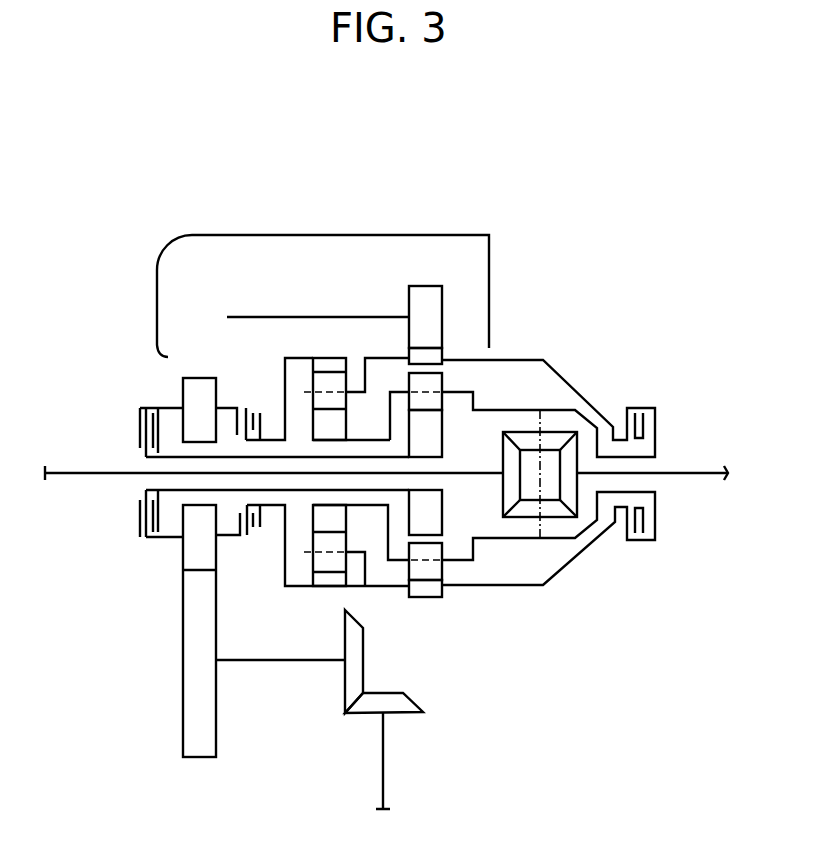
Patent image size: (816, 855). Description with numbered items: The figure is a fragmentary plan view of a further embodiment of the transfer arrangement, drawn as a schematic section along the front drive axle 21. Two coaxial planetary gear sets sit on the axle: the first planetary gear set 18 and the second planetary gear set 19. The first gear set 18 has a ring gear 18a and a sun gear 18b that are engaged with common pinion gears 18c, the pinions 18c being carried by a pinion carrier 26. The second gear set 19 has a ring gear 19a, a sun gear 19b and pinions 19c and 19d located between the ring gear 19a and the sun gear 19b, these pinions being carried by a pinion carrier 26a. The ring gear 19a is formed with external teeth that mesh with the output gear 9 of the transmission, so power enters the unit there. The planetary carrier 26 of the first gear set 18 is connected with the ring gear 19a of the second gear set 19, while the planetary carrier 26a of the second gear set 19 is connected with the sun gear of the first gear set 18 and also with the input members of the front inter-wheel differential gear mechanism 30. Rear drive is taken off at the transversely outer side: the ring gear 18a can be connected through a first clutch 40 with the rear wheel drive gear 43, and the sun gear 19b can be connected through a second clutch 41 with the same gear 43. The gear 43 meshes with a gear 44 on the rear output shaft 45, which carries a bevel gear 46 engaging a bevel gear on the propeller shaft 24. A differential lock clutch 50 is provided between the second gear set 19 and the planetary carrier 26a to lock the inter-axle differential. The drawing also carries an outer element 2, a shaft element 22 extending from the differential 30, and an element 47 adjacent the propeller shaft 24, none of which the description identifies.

The housing 2 is at (415, 235).
The output gear 9 is at (433, 287).
The first planetary gear set 18 is at (327, 597).
The ring gear 18a is at (325, 363).
The sun gear 18b is at (320, 519).
The pinion gears 18c is at (347, 399).
The second planetary gear set 19 is at (427, 600).
The ring gear 19a is at (441, 358).
The sun gear 19b is at (437, 517).
The pinion 19c is at (441, 560).
The pinion 19d is at (441, 386).
The front drive axle 21 is at (104, 477).
The output shaft 22 is at (689, 473).
The propeller shaft 24 is at (384, 775).
The pinion carrier 26 is at (392, 358).
The pinion carrier 26a is at (505, 410).
The front inter-wheel differential gear mechanism 30 is at (572, 430).
The first clutch 40 is at (246, 406).
The second clutch 41 is at (148, 405).
The rear wheel drive gear 43 is at (201, 378).
The gear 44 is at (183, 697).
The rear output shaft 45 is at (313, 665).
The bevel gear 46 is at (358, 665).
The cam block 47 is at (410, 702).
The differential lock clutch 50 is at (660, 414).